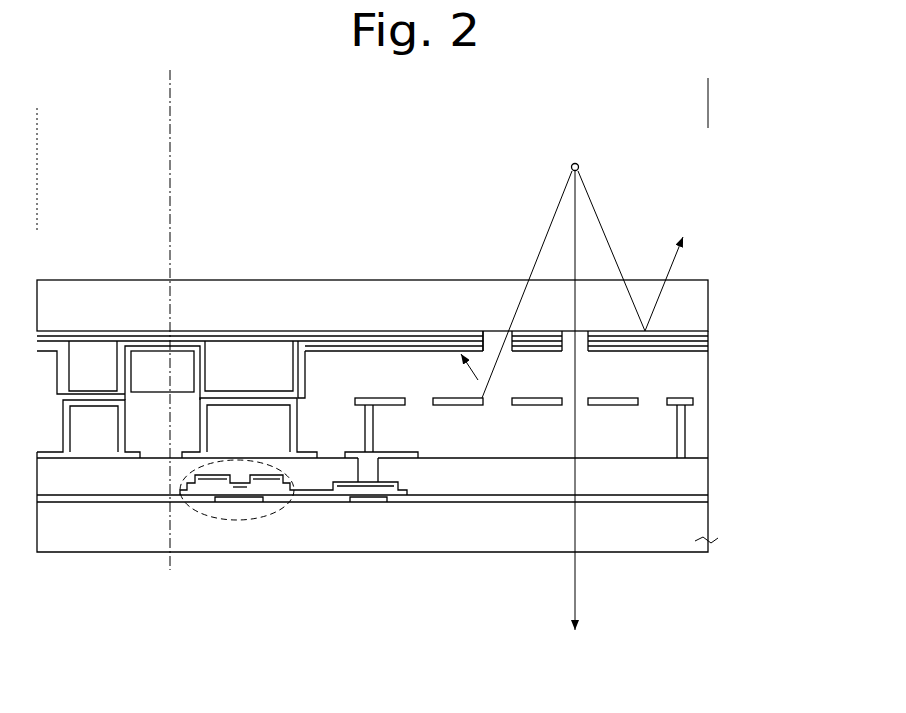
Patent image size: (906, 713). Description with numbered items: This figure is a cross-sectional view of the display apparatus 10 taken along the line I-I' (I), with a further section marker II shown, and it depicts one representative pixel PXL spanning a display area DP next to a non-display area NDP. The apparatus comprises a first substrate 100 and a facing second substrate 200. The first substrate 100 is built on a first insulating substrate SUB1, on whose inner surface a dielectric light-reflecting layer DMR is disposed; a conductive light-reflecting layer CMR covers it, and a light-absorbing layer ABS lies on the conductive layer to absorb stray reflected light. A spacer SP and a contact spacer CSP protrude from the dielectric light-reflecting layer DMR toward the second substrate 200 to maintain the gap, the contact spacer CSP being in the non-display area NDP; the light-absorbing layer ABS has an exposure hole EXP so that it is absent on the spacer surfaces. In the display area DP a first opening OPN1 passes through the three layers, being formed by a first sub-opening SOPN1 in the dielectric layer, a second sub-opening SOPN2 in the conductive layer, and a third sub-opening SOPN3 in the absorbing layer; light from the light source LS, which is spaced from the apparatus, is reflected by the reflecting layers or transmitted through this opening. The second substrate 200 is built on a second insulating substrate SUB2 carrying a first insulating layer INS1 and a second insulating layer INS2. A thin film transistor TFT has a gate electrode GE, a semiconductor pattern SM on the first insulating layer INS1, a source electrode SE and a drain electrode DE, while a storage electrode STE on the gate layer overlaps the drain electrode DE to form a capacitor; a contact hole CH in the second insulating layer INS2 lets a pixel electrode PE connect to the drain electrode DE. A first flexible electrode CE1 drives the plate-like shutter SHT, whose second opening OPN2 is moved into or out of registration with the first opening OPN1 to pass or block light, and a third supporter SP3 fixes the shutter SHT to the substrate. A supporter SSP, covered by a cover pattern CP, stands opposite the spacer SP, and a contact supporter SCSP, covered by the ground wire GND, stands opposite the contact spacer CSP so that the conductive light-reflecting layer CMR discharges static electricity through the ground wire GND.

The display apparatus 10 is at (772, 127).
The first substrate 100 is at (434, 301).
The second substrate 200 is at (434, 432).
The first insulating substrate SUB1 is at (712, 287).
The dielectric light-reflecting layer DMR is at (708, 334).
The conductive light-reflecting layer CMR is at (708, 341).
The light-absorbing layer ABS is at (708, 352).
The contact spacer CSP is at (93, 350).
The spacer SP is at (250, 350).
The exposure hole EXP is at (307, 398).
The first flexible electrode CE1 is at (387, 397).
The first opening OPN1 is at (537, 234).
The first sub-opening SOPN1 is at (487, 336).
The second sub-opening SOPN2 is at (489, 342).
The third sub-opening SOPN3 is at (491, 348).
The light source LS is at (572, 387).
The second insulating substrate SUB2 is at (703, 519).
The first insulating layer INS1 is at (709, 497).
The second insulating layer INS2 is at (702, 473).
The third supporter SP3 is at (697, 404).
The ground wire GND is at (48, 457).
The contact supporter SCSP is at (92, 445).
The cover pattern CP is at (197, 413).
The thin film transistor TFT is at (286, 528).
The source electrode SE is at (189, 486).
The gate electrode GE is at (230, 500).
The supporter SSP is at (255, 481).
The semiconductor pattern SM is at (276, 488).
The drain electrode DE is at (316, 493).
The storage electrode STE is at (363, 503).
The contact hole CH is at (371, 475).
The pixel electrode PE is at (411, 456).
The second opening OPN2 is at (496, 410).
The shutter SHT is at (548, 408).
The pixel PXL is at (708, 86).
The non-display area NDP is at (170, 120).
The display area DP is at (708, 120).
The line I-I' I is at (376, 556).
The section line II-II' II is at (453, 333).